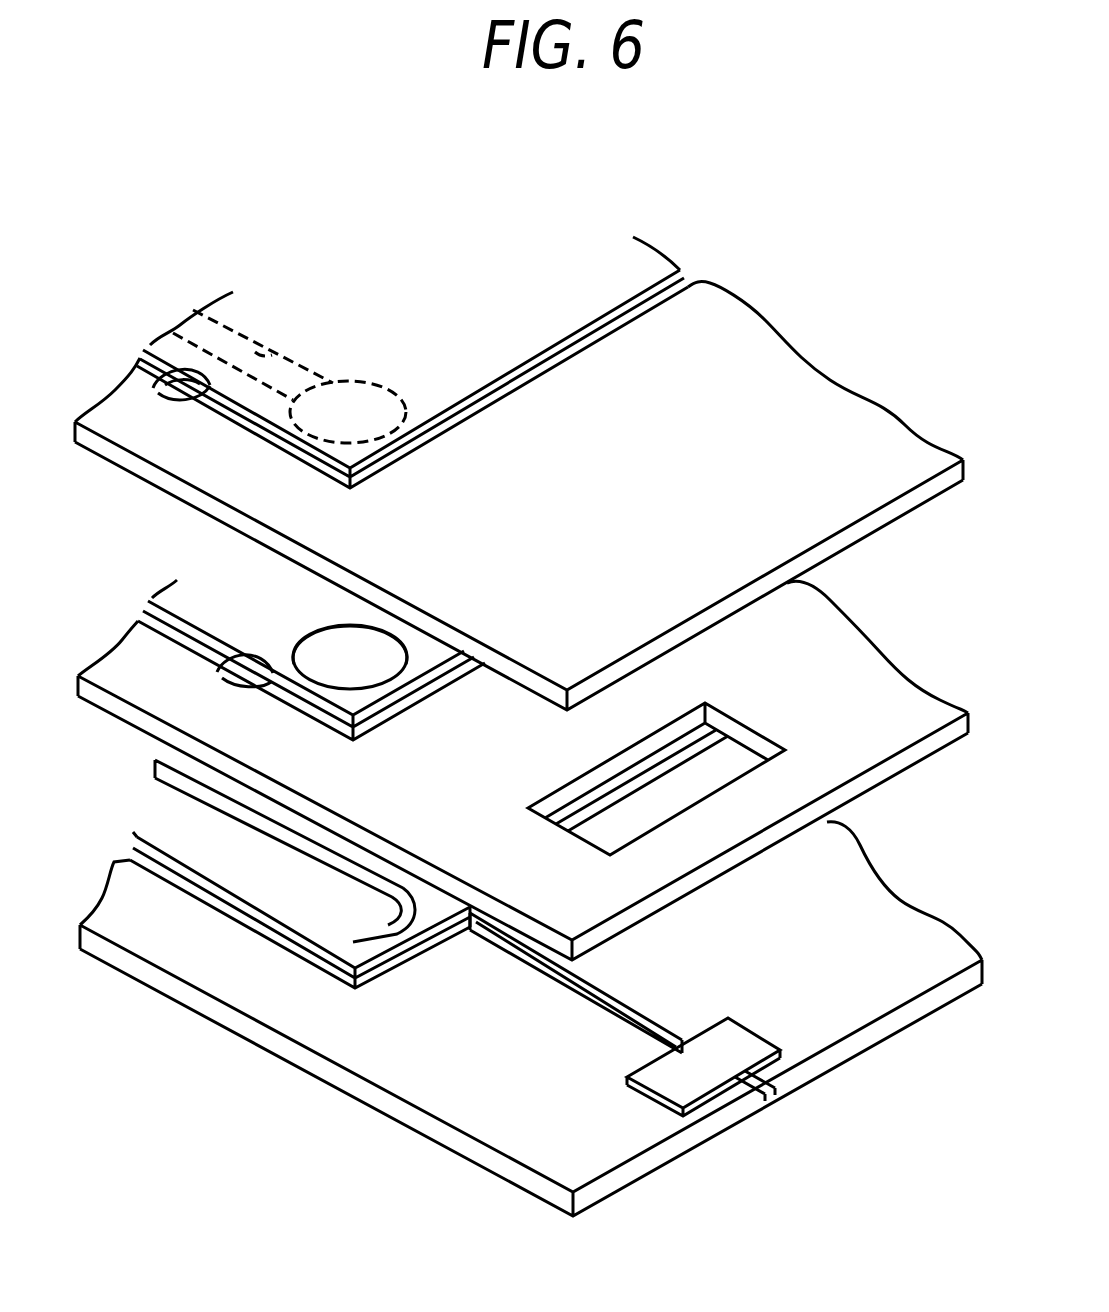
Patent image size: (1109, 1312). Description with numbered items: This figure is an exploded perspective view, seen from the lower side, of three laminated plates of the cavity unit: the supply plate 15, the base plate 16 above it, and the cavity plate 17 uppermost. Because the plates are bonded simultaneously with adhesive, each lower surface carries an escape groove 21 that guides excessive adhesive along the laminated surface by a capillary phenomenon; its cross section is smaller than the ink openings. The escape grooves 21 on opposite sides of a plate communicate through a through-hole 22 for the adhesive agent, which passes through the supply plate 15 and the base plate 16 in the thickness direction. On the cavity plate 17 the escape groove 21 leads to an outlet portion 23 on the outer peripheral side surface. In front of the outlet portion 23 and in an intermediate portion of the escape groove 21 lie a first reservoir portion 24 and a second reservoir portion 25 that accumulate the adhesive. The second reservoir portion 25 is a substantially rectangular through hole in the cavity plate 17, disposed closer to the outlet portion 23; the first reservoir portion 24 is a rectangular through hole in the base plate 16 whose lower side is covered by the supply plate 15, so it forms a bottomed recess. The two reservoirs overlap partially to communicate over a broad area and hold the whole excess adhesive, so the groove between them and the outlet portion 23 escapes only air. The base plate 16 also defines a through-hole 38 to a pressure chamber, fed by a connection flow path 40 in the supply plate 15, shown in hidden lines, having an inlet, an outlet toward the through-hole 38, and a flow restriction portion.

The supply plate 15 is at (880, 492).
The base plate 16 is at (900, 733).
The cavity plate 17 is at (920, 968).
The escape groove 21 is at (550, 365).
The through-hole for adhesive agent 22 is at (160, 393).
The outlet portion 23 is at (765, 1097).
The first reservoir portion 24 is at (718, 730).
The second reservoir portion 25 is at (753, 1037).
The through-hole 38 is at (340, 630).
The connection flow path 40 is at (277, 352).